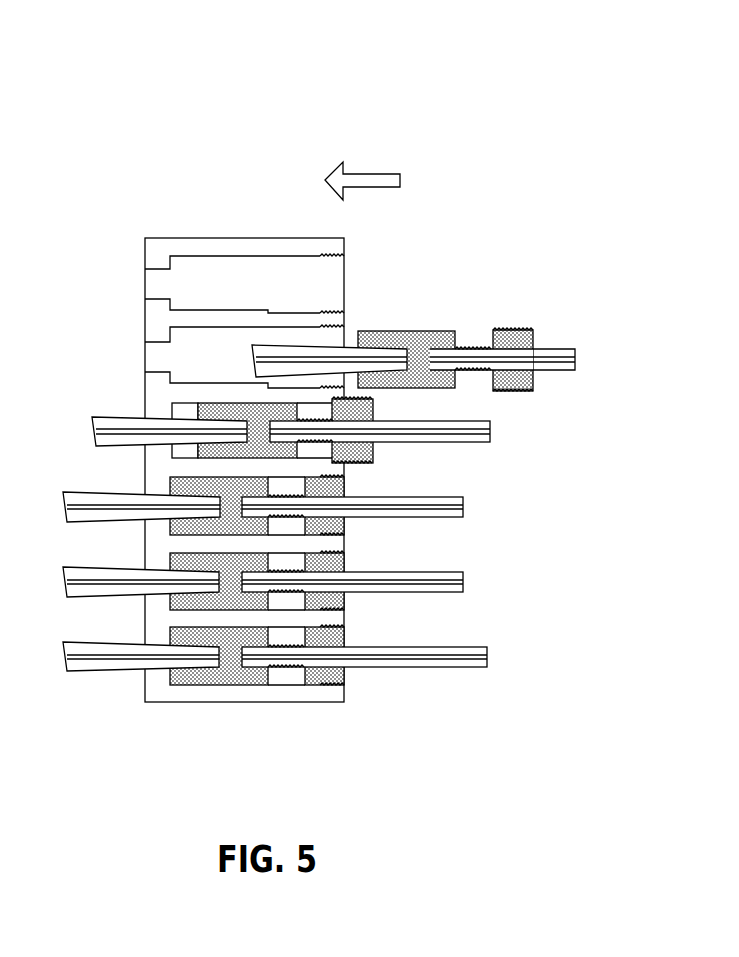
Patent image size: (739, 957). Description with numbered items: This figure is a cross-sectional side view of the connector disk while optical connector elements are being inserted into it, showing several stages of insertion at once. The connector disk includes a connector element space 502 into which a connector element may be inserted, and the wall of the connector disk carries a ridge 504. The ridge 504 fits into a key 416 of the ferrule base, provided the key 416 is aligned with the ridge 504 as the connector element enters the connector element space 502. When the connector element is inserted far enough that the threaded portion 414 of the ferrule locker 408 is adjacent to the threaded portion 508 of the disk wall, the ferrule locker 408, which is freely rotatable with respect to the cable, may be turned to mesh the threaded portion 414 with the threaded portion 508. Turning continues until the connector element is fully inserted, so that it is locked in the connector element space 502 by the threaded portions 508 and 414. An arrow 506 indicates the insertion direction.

The ridge 504 is at (191, 307).
The connector element space 502 is at (228, 287).
The threaded portion 508 is at (333, 254).
The flow direction arrow 506 is at (365, 174).
The key 416 is at (428, 388).
The threaded portion 414 is at (513, 330).
The ferrule locker 408 is at (530, 380).